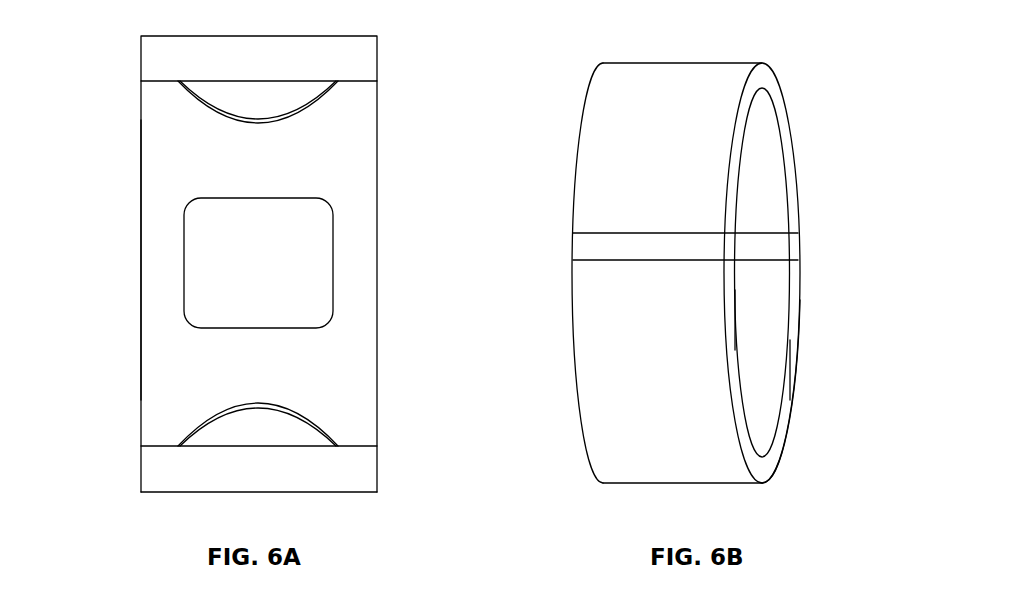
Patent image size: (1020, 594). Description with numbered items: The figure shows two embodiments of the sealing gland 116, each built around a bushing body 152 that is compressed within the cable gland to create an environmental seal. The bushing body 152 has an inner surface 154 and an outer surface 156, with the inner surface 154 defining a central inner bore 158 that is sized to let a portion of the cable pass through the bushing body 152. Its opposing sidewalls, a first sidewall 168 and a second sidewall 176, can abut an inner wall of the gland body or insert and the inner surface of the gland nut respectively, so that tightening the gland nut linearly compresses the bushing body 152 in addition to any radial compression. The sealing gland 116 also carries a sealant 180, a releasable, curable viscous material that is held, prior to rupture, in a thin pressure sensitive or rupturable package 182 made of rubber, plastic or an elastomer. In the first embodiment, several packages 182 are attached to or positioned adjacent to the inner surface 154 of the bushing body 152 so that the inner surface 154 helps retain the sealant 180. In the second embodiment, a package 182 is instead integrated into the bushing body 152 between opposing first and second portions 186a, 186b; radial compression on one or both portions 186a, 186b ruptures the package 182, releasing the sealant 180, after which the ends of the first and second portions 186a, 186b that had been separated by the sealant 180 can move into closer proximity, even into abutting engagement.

In FIG. 6A, the sealing gland 116 is at (415, 38).
In FIG. 6B, the sealing gland 116 is at (815, 70).
In FIG. 6A, the bushing body 152 is at (158, 60).
In FIG. 6B, the bushing body 152 is at (685, 83).
In FIG. 6A, the inner surface 154 is at (168, 446).
In FIG. 6B, the inner surface 154 is at (770, 377).
In FIG. 6A, the outer surface 156 is at (355, 492).
In FIG. 6B, the outer surface 156 is at (613, 452).
In FIG. 6A, the inner bore 158 is at (160, 174).
In FIG. 6B, the inner bore 158 is at (770, 322).
In FIG. 6A, the first sidewall 168 is at (141, 378).
In FIG. 6B, the first sidewall 168 is at (578, 408).
In FIG. 6A, the second sidewall 176 is at (377, 177).
In FIG. 6B, the second sidewall 176 is at (793, 340).
In FIG. 6A, the sealant 180 is at (287, 100).
In FIG. 6B, the sealant 180 is at (576, 245).
In FIG. 6A, the package 182 is at (282, 123).
In FIG. 6B, the package 182 is at (775, 242).
In FIG. 6B, the first portion 186a is at (790, 148).
In FIG. 6B, the second portion 186b is at (787, 437).